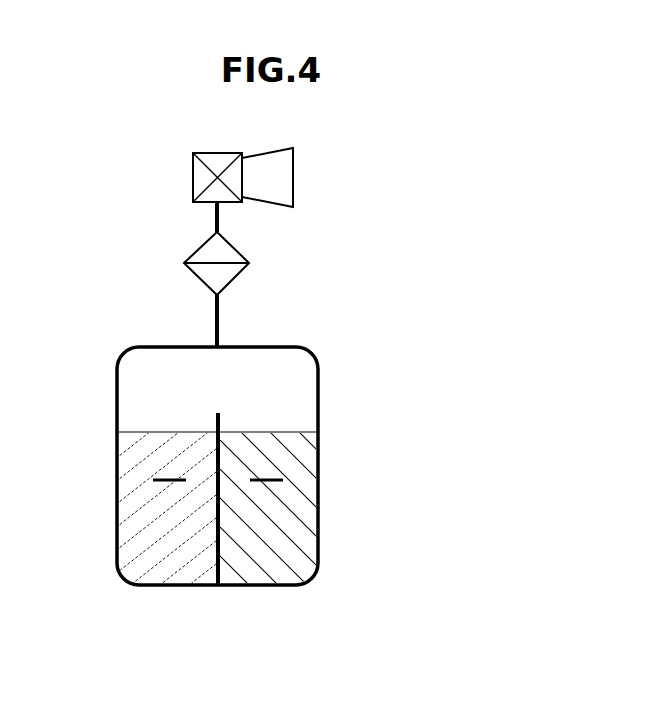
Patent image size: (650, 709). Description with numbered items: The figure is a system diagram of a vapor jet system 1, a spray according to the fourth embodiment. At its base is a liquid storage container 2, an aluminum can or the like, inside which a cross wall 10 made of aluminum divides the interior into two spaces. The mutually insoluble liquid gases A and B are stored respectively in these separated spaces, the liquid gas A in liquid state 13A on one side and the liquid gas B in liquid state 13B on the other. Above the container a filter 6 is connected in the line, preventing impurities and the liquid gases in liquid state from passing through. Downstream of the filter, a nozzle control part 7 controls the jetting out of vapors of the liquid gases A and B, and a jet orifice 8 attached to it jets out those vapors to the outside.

The vapor jet system 1 is at (405, 610).
The liquid storage container 2 is at (345, 323).
The filter 6 is at (230, 246).
The nozzle control part 7 is at (215, 160).
The jet orifice 8 is at (287, 165).
The cross wall 10 is at (215, 418).
The liquid gas A in liquid state 13A is at (172, 586).
The liquid gas B in liquid state 13B is at (265, 586).